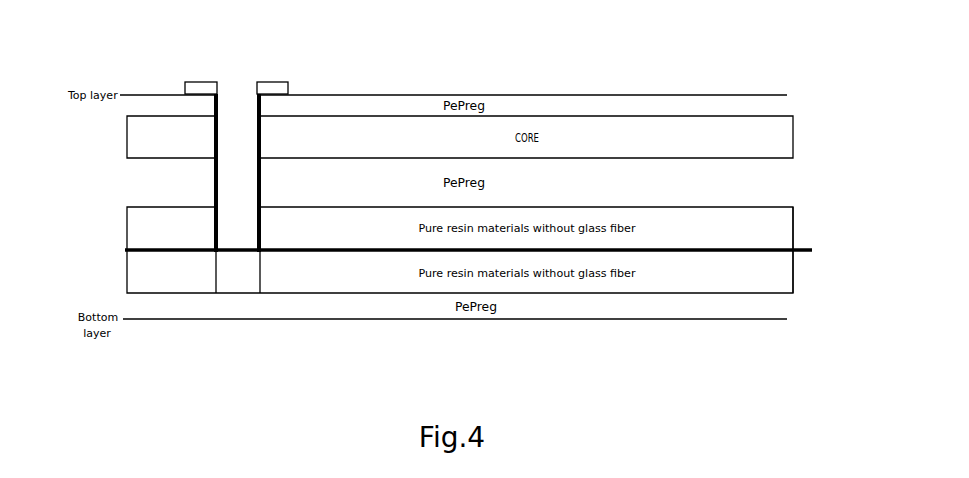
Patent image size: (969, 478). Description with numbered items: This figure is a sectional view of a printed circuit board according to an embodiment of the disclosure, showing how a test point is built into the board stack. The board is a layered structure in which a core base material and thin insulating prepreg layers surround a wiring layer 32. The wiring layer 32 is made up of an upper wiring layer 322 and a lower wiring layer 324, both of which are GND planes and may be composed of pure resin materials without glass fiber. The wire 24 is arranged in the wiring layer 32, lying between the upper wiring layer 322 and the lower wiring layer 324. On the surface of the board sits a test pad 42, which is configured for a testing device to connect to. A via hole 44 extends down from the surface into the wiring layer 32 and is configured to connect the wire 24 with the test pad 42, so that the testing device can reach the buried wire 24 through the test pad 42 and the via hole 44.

The test pad 42 is at (236, 61).
The wire 24 is at (252, 225).
The upper wiring layer 322 is at (113, 223).
The lower wiring layer 324 is at (421, 302).
The via hole 44 is at (232, 238).
The wiring layer 32 is at (832, 250).